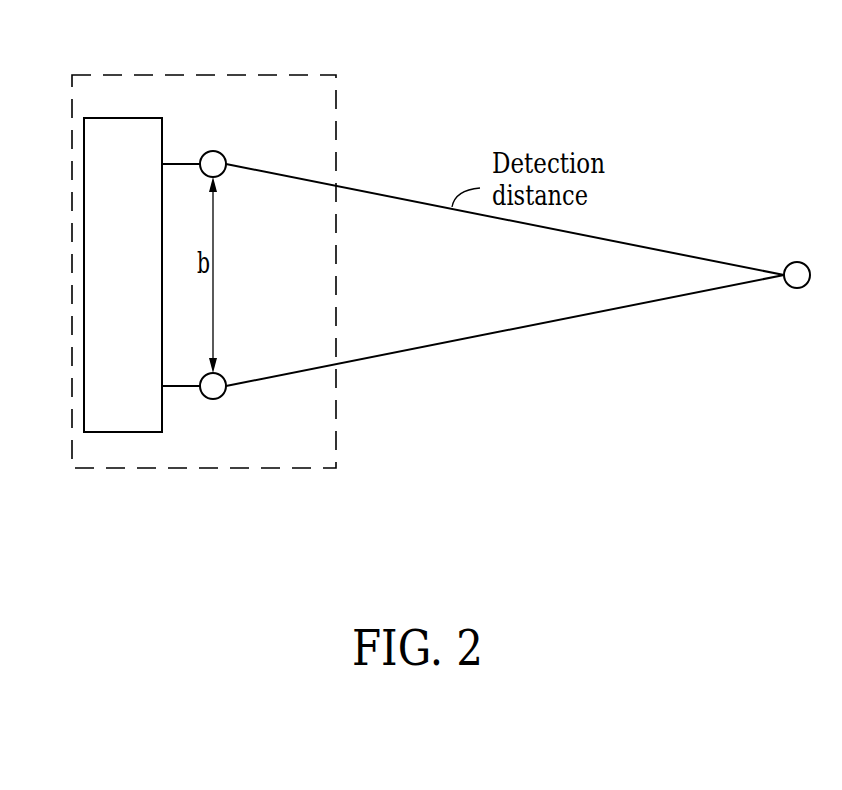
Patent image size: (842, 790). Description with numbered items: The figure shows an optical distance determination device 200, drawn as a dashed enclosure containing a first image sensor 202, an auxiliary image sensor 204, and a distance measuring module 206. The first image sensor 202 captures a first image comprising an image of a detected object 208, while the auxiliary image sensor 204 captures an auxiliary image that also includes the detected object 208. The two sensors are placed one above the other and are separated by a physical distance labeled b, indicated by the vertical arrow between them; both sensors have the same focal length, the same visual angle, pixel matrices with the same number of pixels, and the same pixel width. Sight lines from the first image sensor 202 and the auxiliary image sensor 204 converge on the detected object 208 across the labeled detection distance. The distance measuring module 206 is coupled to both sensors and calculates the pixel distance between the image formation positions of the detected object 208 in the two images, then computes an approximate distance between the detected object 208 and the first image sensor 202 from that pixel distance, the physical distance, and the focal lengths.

The optical distance determination device 200 is at (293, 75).
The first image sensor 202 is at (213, 151).
The auxiliary image sensor 204 is at (213, 399).
The distance measuring module 206 is at (142, 278).
The detected object 208 is at (797, 262).